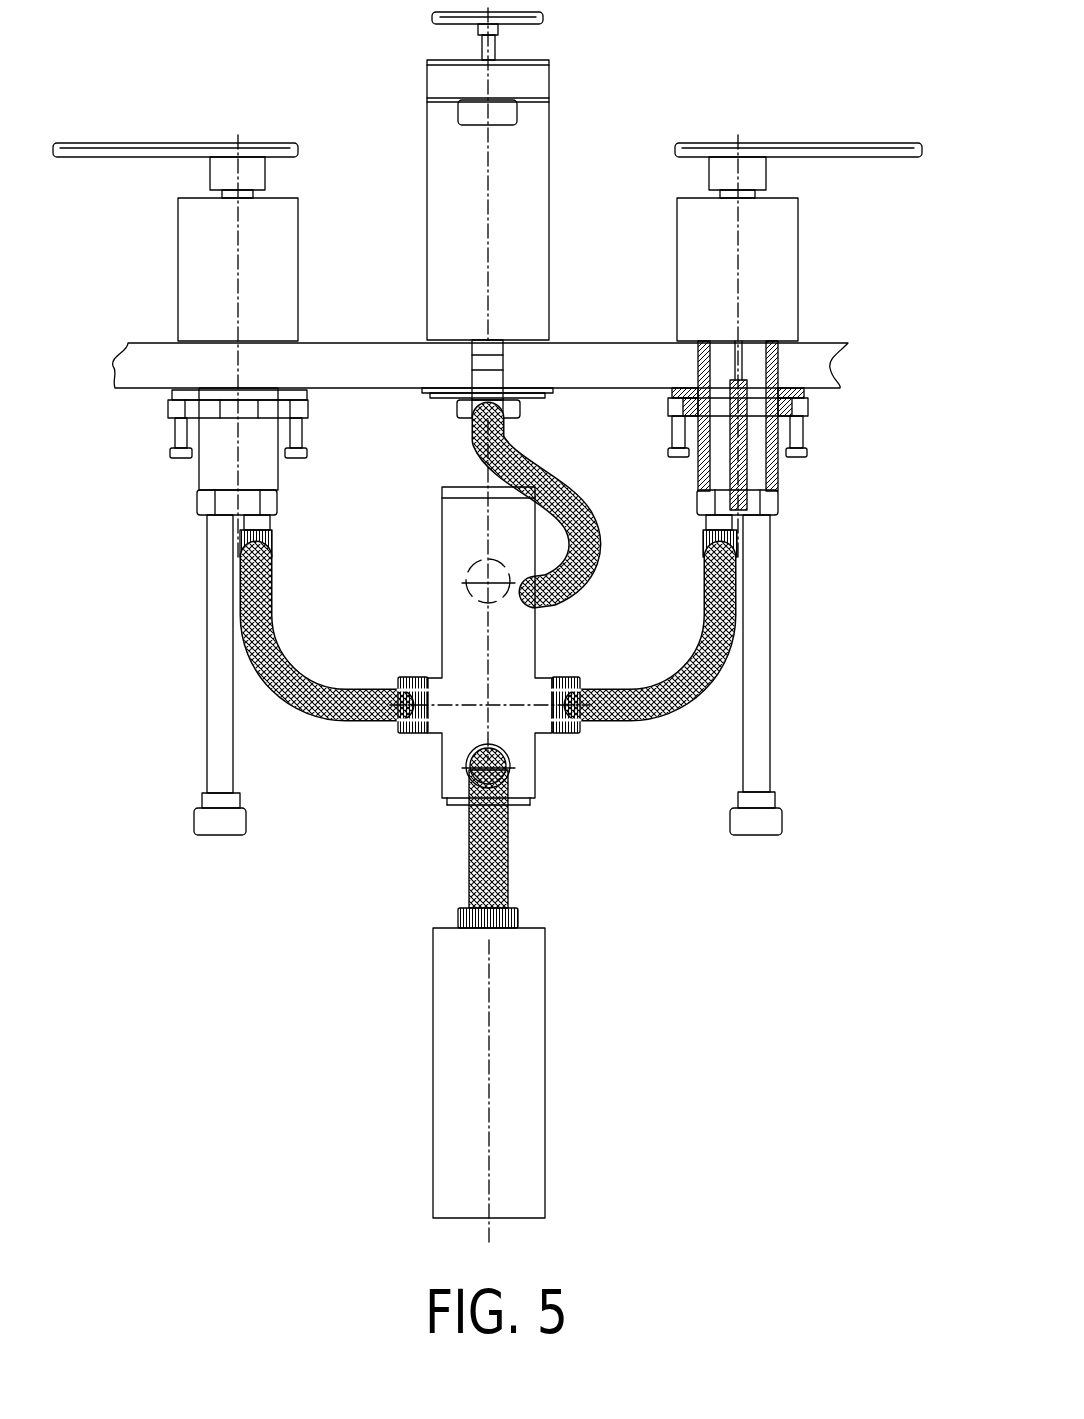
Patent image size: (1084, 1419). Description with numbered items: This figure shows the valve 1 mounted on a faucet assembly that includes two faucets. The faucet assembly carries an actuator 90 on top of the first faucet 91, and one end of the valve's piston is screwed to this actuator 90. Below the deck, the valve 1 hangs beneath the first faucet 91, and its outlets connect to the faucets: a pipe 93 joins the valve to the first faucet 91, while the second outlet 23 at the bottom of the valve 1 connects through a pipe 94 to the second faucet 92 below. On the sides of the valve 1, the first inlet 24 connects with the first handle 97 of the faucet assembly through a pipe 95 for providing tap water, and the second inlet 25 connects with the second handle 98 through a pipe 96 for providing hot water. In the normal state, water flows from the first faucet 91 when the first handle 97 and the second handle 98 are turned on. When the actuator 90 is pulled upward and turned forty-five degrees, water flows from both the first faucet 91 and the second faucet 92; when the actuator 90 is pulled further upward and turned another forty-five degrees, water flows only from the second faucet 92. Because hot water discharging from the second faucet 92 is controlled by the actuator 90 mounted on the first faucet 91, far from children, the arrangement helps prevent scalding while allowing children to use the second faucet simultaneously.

The valve 1 is at (436, 560).
The second outlet 23 is at (462, 768).
The first inlet 24 is at (558, 676).
The second inlet 25 is at (428, 675).
The actuator 90 is at (497, 44).
The first faucet 91 is at (549, 80).
The second faucet 92 is at (530, 1108).
The pipe 93 is at (583, 496).
The pipe 94 is at (508, 880).
The pipe 95 is at (275, 692).
The pipe 96 is at (646, 712).
The first handle 97 is at (792, 265).
The second handle 98 is at (272, 268).